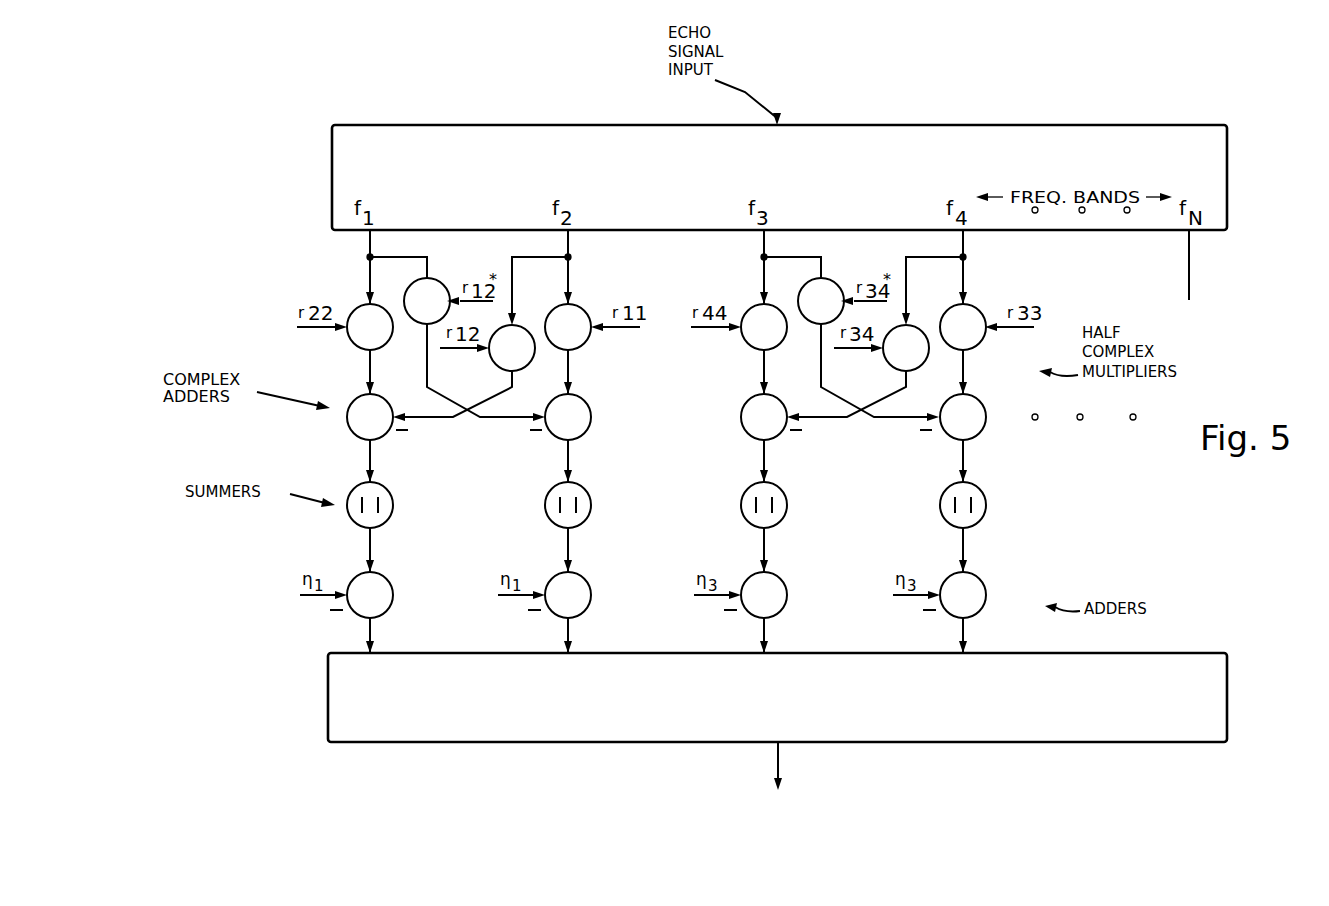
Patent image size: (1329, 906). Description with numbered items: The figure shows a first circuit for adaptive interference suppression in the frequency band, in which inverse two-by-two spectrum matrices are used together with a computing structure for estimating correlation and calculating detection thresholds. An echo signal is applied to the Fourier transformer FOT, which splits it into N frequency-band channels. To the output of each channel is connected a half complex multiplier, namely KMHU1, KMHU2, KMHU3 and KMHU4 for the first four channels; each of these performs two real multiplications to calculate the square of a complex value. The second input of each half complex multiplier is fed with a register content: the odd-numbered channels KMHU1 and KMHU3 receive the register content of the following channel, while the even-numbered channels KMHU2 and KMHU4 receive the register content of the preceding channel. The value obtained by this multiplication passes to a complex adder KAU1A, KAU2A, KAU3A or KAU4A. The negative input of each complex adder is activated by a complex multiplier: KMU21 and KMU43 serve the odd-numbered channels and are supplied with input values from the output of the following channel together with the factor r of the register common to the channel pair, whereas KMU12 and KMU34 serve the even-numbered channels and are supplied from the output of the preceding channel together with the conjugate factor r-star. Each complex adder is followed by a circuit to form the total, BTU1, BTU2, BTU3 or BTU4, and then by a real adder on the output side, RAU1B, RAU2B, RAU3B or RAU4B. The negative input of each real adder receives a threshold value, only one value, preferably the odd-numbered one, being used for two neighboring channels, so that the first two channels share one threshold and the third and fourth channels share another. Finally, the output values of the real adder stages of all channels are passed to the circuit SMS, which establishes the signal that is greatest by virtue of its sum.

The Fourier transformer FOT is at (1227, 190).
The half complex multiplier KMHU1 is at (354, 338).
The half complex multiplier KMHU2 is at (590, 338).
The half complex multiplier KMHU3 is at (748, 338).
The half complex multiplier KMHU4 is at (985, 338).
The complex multiplier KMU12 is at (433, 274).
The complex multiplier KMU21 is at (498, 361).
The complex multiplier KMU34 is at (827, 274).
The complex multiplier KMU43 is at (892, 361).
The complex adder KAU1A is at (346, 424).
The complex adder KAU2A is at (592, 430).
The complex adder KAU3A is at (796, 420).
The complex adder KAU4A is at (995, 420).
The circuit to form the total BTU1 is at (401, 505).
The circuit to form the total BTU2 is at (599, 505).
The circuit to form the total BTU3 is at (795, 505).
The circuit to form the total BTU4 is at (995, 505).
The real adder RAU1B is at (406, 594).
The real adder RAU2B is at (602, 594).
The real adder RAU3B is at (798, 594).
The real adder RAU4B is at (1000, 594).
The circuit for establishing the greatest signal SMS is at (1200, 738).